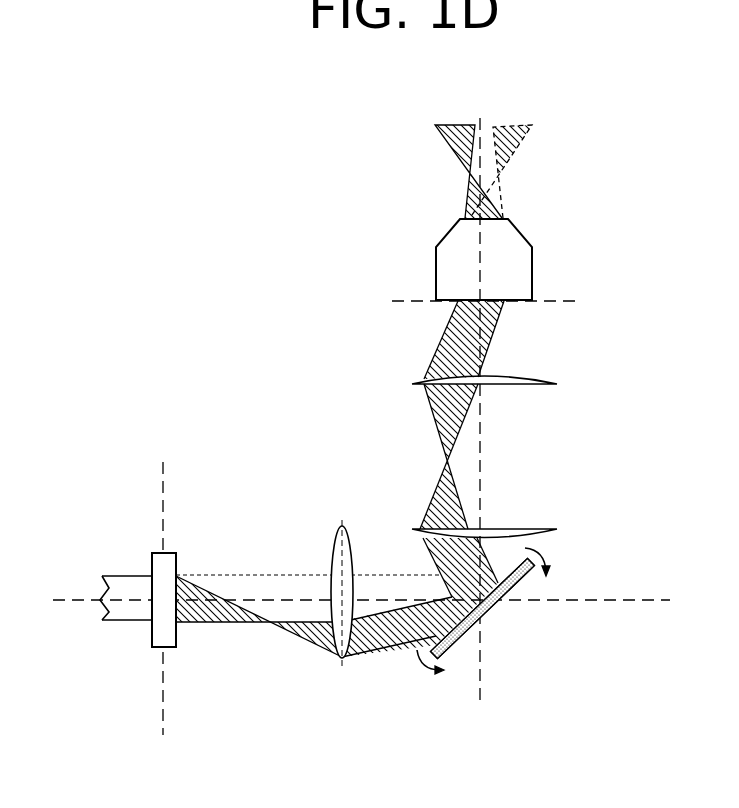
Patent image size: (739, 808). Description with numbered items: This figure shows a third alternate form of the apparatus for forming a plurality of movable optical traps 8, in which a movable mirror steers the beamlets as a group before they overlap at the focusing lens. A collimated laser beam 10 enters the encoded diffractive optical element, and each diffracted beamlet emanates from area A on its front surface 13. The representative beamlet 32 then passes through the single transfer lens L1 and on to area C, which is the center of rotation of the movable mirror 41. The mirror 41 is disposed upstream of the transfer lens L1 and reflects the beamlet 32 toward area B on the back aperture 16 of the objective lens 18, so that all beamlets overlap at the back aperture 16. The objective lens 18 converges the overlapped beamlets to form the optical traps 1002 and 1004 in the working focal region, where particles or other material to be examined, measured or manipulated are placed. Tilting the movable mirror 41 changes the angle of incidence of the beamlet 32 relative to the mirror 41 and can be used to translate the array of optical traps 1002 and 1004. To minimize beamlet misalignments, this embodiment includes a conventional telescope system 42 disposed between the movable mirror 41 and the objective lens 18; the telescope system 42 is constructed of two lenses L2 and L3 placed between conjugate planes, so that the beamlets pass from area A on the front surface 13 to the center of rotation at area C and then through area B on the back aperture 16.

The apparatus for forming a plurality of movable optical traps 8 is at (345, 292).
The laser beam 10 is at (102, 572).
The front surface 13 is at (176, 553).
The back aperture 16 is at (523, 303).
The objective lens 18 is at (519, 262).
The beamlet 32 is at (375, 652).
The movable mirror 41 is at (493, 605).
The telescope system 42 is at (491, 450).
The optical trap 1002 is at (442, 134).
The optical trap 1004 is at (513, 140).
The transfer lens L1 is at (342, 660).
The telescope lens L2 is at (557, 382).
The telescope lens L3 is at (557, 530).
The area A is at (178, 605).
The area B is at (482, 300).
The area C is at (503, 606).